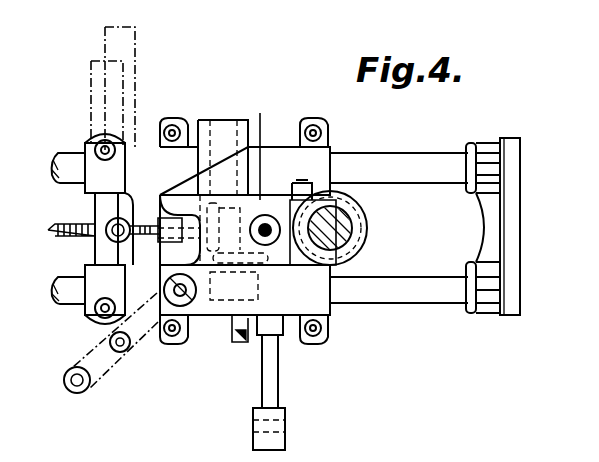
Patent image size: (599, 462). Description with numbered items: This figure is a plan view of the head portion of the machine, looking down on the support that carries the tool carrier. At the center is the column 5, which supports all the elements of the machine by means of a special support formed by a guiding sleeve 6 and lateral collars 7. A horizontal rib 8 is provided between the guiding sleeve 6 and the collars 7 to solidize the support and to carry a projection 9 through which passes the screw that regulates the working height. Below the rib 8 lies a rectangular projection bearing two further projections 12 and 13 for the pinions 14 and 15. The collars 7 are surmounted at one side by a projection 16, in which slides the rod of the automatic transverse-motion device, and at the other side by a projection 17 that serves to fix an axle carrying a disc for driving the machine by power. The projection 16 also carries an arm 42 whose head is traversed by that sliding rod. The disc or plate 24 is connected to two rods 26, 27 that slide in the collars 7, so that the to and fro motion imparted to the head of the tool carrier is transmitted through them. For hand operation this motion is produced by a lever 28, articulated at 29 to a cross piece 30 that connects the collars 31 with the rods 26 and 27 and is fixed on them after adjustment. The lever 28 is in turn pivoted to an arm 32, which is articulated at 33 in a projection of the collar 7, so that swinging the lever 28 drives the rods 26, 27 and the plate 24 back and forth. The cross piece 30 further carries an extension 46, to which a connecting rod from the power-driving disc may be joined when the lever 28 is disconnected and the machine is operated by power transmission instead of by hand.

The column 5 is at (350, 226).
The guiding sleeve 6 is at (367, 240).
The lateral collars 7 is at (272, 156).
The horizontal rib 8 is at (260, 151).
The projection 9 is at (268, 228).
The projection 12 is at (230, 312).
The projection 13 is at (168, 243).
The pinion 14 is at (234, 230).
The pinion 15 is at (225, 210).
The projection 16 is at (285, 318).
The projection 17 is at (222, 122).
The disc or plate 24 is at (518, 280).
The rod 26 is at (415, 156).
The rod 27 is at (418, 298).
The lever 28 is at (135, 70).
The articulation 29 is at (108, 234).
The cross piece 30 is at (95, 207).
The collars 31 is at (80, 153).
The arm 32 is at (98, 378).
The articulation 33 is at (190, 310).
The arm 42 is at (262, 396).
The extension 46 is at (94, 100).